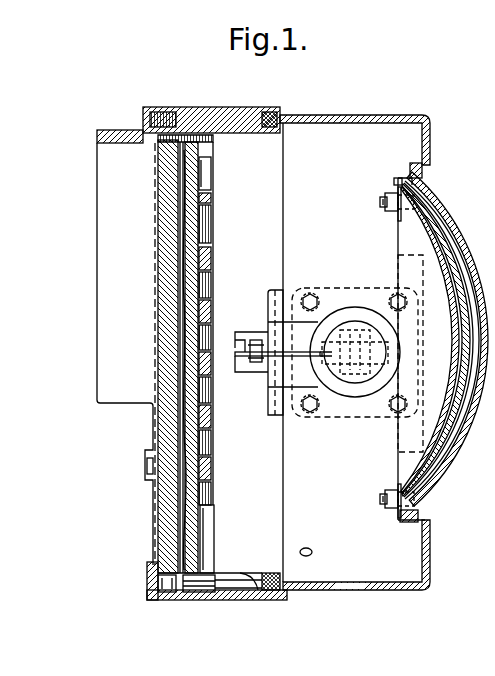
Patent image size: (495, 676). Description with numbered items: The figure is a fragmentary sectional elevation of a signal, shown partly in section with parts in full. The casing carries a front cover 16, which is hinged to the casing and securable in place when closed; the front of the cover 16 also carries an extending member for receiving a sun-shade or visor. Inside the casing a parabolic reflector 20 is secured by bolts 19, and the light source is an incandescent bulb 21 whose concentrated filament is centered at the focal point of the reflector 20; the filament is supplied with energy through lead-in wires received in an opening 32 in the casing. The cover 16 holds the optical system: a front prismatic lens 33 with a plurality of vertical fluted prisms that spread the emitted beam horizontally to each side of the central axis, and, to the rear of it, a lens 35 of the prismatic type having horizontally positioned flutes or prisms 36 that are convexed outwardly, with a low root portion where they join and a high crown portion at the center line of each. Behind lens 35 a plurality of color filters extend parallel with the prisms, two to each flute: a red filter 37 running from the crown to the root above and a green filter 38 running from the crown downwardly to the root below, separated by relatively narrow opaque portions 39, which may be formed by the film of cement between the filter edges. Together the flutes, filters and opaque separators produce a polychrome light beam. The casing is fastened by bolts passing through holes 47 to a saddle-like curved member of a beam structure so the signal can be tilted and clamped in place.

The front cover 16 is at (195, 107).
The bolts 19 is at (387, 207).
The parabolic reflector 20 is at (398, 180).
The incandescent bulb 21 is at (348, 323).
The opening 32 is at (353, 589).
The front prismatic lens 33 is at (169, 502).
The lens 35 is at (200, 440).
The flutes or prisms 36 is at (198, 175).
The red filter 37 is at (208, 235).
The green filter 38 is at (211, 262).
The opaque portions 39 is at (207, 215).
The holes 47 is at (312, 550).